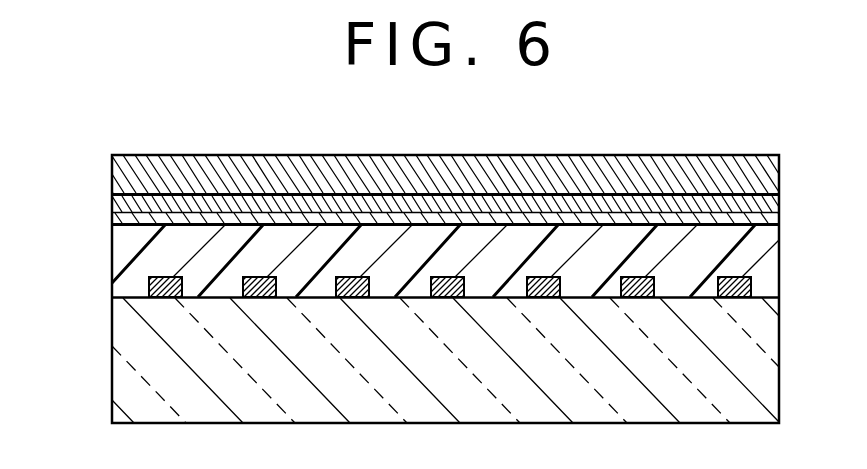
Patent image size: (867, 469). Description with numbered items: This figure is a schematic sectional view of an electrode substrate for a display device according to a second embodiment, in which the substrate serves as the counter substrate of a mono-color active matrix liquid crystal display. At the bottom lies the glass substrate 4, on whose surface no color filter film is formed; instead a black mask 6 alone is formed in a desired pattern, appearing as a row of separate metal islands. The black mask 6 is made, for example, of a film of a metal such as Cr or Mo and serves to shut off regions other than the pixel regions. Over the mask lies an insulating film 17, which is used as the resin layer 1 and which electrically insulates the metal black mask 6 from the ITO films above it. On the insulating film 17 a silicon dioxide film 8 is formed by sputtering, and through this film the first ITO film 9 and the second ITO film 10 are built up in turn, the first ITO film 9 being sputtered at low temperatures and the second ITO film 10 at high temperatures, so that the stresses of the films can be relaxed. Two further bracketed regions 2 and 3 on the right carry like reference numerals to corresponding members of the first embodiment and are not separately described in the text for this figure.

The resin layer 1 is at (442, 289).
The intermediate layer 2 is at (457, 223).
The surface protective layer 3 is at (443, 181).
The glass substrate 4 is at (755, 360).
The black mask 6 is at (167, 298).
The SiO2 film 8 is at (111, 218).
The first ITO film 9 is at (111, 197).
The second ITO film 10 is at (111, 170).
The insulating film 17 is at (120, 258).